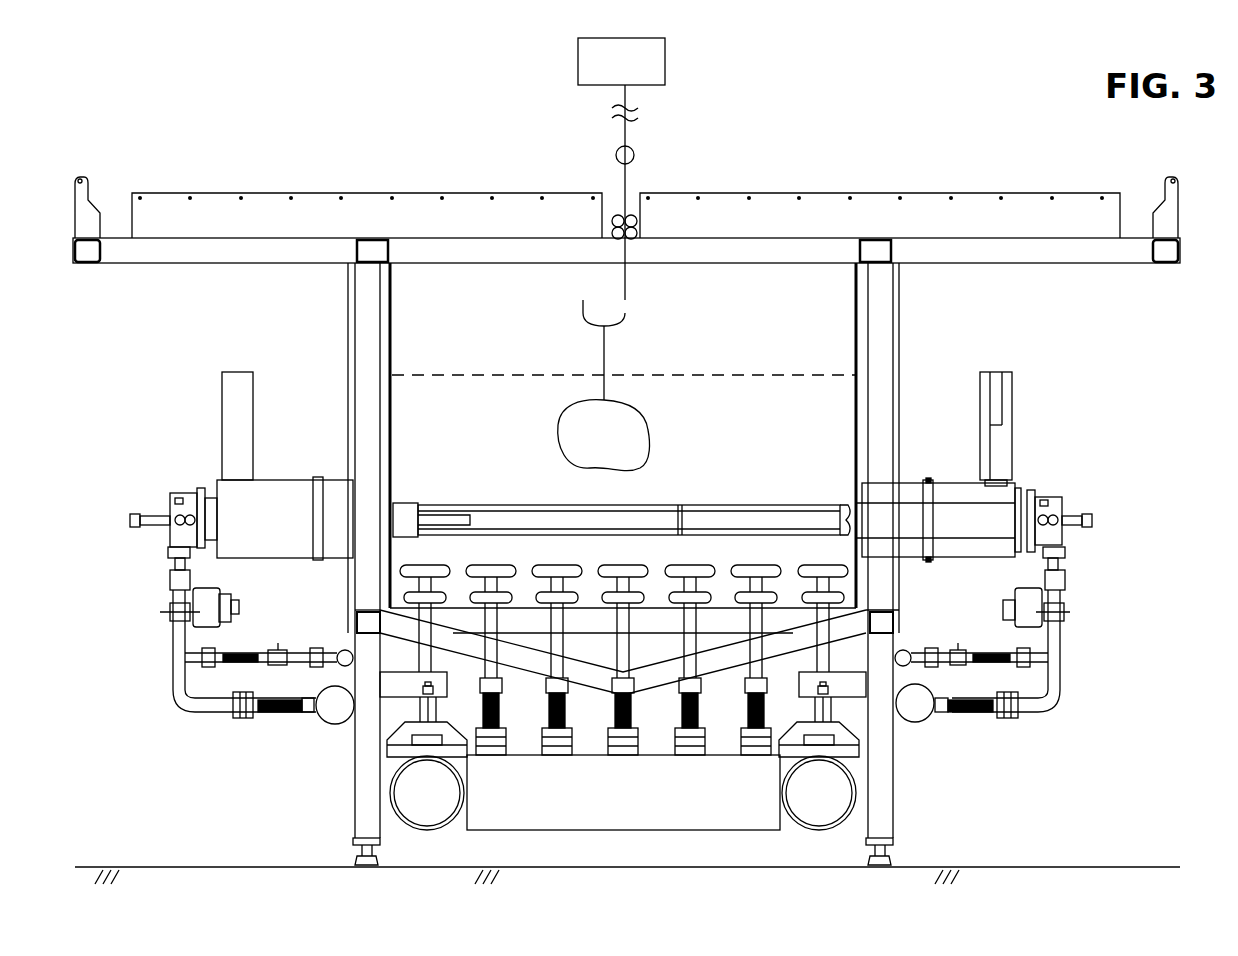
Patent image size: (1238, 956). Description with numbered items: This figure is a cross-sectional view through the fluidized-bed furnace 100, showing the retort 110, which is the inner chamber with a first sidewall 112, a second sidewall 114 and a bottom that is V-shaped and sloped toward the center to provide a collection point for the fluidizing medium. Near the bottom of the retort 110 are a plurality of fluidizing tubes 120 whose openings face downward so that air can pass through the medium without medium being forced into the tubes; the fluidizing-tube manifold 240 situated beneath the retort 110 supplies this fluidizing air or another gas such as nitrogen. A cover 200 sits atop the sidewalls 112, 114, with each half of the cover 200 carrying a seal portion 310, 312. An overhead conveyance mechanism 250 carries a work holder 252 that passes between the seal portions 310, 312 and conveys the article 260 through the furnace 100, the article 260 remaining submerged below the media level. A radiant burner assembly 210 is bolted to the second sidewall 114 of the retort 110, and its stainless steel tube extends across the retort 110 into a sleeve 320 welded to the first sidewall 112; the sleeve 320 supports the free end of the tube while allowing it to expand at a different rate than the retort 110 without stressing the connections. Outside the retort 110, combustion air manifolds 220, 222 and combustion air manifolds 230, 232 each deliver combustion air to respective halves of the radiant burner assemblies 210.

The fluidized-bed furnace 100 is at (322, 136).
The retort 110 is at (395, 338).
The first sidewall 112 is at (355, 308).
The second sidewall 114 is at (903, 308).
The fluidizing tubes 120 is at (807, 567).
The cover 200 is at (468, 203).
The radiant burner assembly 210 is at (1015, 400).
The first combustion air manifold 220 is at (907, 650).
The second combustion air manifold 222 is at (342, 652).
The first combustion air manifold 230 is at (920, 724).
The second combustion air manifold 232 is at (330, 727).
The fluidizing-tube manifold 240 is at (657, 806).
The overhead conveyance mechanism 250 is at (668, 60).
The work holder 252 is at (627, 177).
The article 260 is at (625, 449).
The seal portion 310 is at (631, 213).
The seal portion 312 is at (617, 213).
The sleeve 320 is at (404, 507).